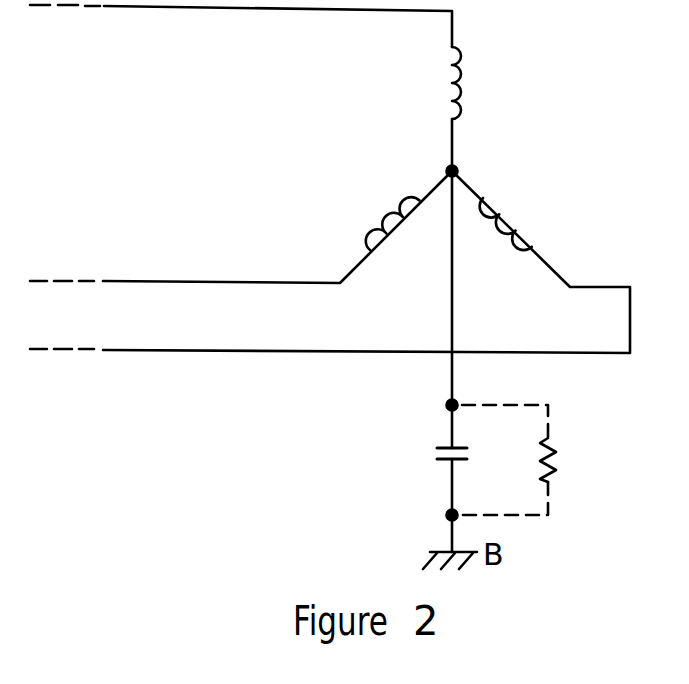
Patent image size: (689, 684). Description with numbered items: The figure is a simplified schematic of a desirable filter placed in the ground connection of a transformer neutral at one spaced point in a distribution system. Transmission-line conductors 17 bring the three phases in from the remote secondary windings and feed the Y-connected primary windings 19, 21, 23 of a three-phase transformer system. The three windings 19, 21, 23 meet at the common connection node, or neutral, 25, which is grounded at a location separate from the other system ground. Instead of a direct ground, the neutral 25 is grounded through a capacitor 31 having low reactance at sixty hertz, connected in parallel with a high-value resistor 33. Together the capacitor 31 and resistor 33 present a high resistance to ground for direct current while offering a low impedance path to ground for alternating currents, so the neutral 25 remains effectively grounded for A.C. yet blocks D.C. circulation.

The transmission-line conductors 17 is at (192, 241).
The primary winding 19 is at (461, 67).
The primary winding 21 is at (514, 252).
The primary winding 23 is at (382, 219).
The common connection node (neutral) 25 is at (458, 172).
The capacitor 31 is at (438, 462).
The high-value resistor 33 is at (556, 468).